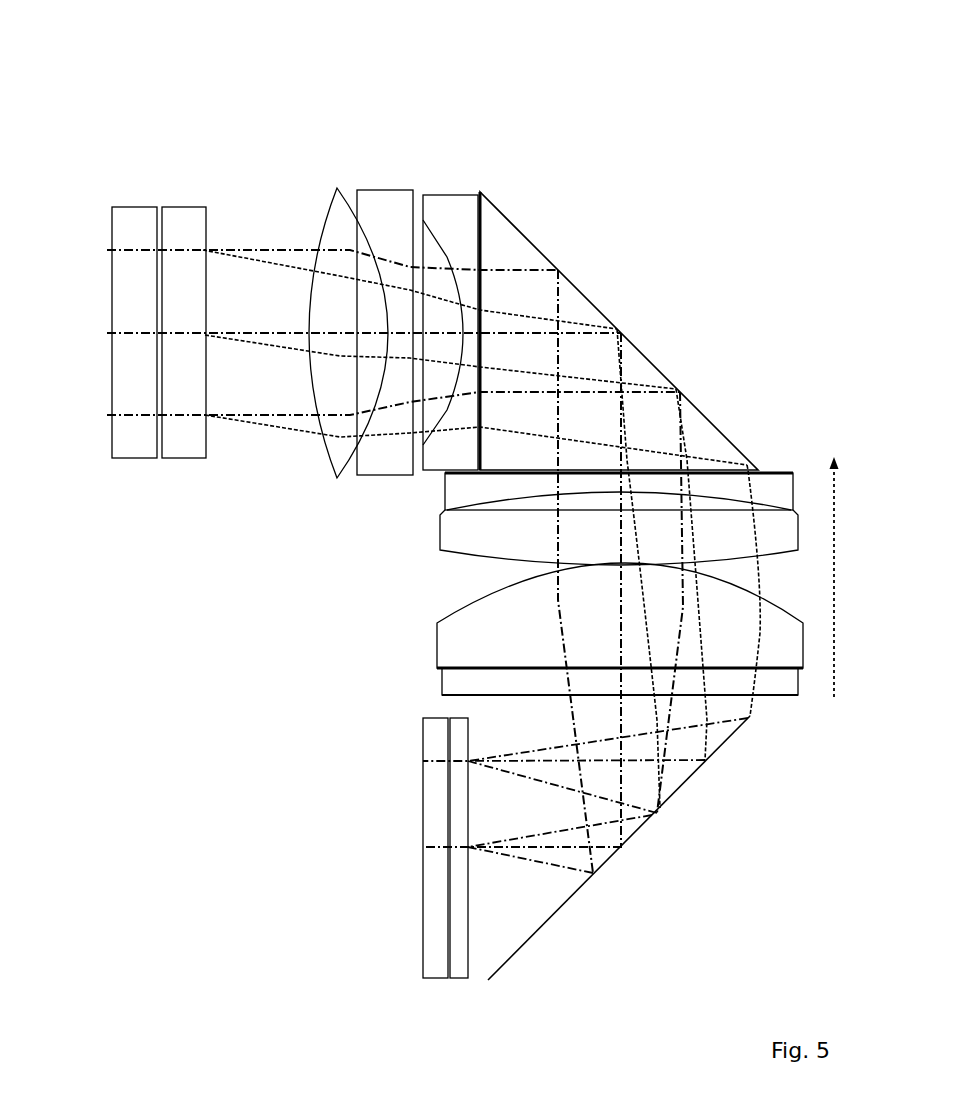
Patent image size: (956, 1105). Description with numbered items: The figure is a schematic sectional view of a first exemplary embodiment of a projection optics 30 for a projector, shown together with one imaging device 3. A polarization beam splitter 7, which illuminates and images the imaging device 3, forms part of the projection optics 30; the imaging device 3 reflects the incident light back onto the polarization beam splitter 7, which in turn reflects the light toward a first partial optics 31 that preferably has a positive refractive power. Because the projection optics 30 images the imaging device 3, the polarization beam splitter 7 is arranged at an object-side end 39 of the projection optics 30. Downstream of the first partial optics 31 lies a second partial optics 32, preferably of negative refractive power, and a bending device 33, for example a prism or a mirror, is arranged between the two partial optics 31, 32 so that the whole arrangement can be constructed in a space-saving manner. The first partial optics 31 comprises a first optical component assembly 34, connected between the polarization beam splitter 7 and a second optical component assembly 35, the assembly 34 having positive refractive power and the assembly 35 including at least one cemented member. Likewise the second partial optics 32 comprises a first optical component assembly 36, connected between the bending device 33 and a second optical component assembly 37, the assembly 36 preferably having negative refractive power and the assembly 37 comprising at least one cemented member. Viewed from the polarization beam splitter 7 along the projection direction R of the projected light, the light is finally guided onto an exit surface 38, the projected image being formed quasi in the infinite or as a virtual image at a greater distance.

The projection optics 30 is at (710, 163).
The first partial optics 31 is at (352, 589).
The second partial optics 32 is at (415, 120).
The bending device 33 is at (665, 344).
The first optical component assembly 34 is at (400, 643).
The second optical component assembly 35 is at (385, 512).
The first optical component assembly 36 is at (457, 168).
The second optical component assembly 37 is at (360, 168).
The exit surface 38 is at (88, 262).
The object-side end 39 is at (688, 797).
The imaging device 3 is at (387, 814).
The polarization beam splitter 7 is at (560, 913).
The projection direction R is at (834, 602).